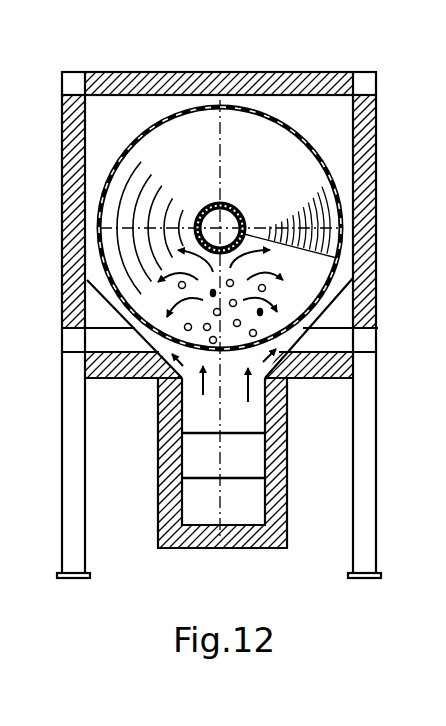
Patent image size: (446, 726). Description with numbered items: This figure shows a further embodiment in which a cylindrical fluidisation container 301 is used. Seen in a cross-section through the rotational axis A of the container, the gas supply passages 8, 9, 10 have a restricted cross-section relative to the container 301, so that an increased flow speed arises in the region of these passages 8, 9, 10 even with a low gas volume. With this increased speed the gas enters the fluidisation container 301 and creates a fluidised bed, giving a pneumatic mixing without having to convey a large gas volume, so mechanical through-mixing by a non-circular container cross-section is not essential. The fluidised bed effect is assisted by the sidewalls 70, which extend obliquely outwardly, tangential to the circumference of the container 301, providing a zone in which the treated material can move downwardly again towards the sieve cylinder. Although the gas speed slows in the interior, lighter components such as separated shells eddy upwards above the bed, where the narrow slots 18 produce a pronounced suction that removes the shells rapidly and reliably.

The fluidisation container 301 is at (293, 125).
The narrow slots 18 is at (218, 204).
The rotational axis A is at (240, 221).
The sidewalls 70 is at (107, 301).
The gas supply passage 10 is at (243, 421).
The gas supply passage 9 is at (242, 465).
The gas supply passage 8 is at (242, 510).